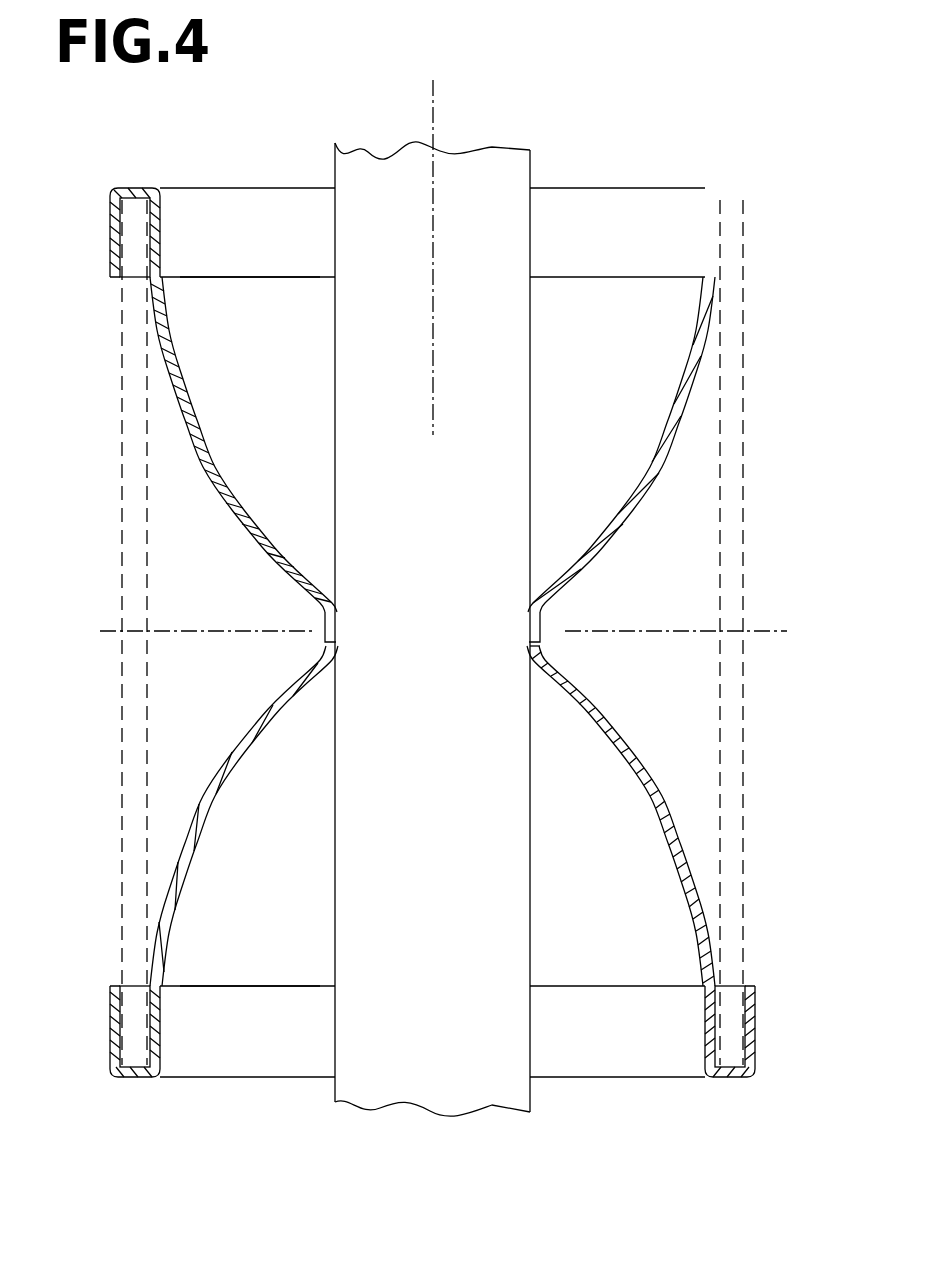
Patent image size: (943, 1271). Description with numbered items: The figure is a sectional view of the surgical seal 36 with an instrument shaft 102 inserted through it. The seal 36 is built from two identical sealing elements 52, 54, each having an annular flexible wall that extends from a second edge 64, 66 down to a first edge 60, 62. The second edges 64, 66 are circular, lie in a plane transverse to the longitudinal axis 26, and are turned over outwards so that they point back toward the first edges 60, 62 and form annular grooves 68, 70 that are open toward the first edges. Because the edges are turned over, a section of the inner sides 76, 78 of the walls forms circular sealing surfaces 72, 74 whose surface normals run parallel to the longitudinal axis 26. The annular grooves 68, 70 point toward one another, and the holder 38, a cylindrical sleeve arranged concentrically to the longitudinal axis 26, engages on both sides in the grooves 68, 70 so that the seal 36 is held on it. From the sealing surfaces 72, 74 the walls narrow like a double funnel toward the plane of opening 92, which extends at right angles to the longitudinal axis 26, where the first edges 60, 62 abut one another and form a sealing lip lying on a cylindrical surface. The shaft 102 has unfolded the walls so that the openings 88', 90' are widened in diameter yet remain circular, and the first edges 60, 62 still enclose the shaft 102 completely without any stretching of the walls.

The longitudinal axis 26 is at (433, 110).
The surgical seal 36 is at (678, 152).
The holder 38 is at (732, 390).
The sealing element 52 is at (196, 469).
The sealing element 54 is at (688, 818).
The first edge 60 is at (538, 626).
The first edge 62 is at (327, 642).
The second edge 64 is at (130, 278).
The second edge 66 is at (728, 990).
The annular groove 68 is at (137, 248).
The annular groove 70 is at (137, 1008).
The sealing surface 72 is at (136, 188).
The sealing surface 74 is at (733, 1077).
The inner side 76 is at (270, 349).
The inner side 78 is at (270, 909).
The widened opening 88' is at (376, 599).
The widened opening 90' is at (493, 679).
The plane of opening 92 is at (758, 631).
The shaft 102 is at (531, 160).